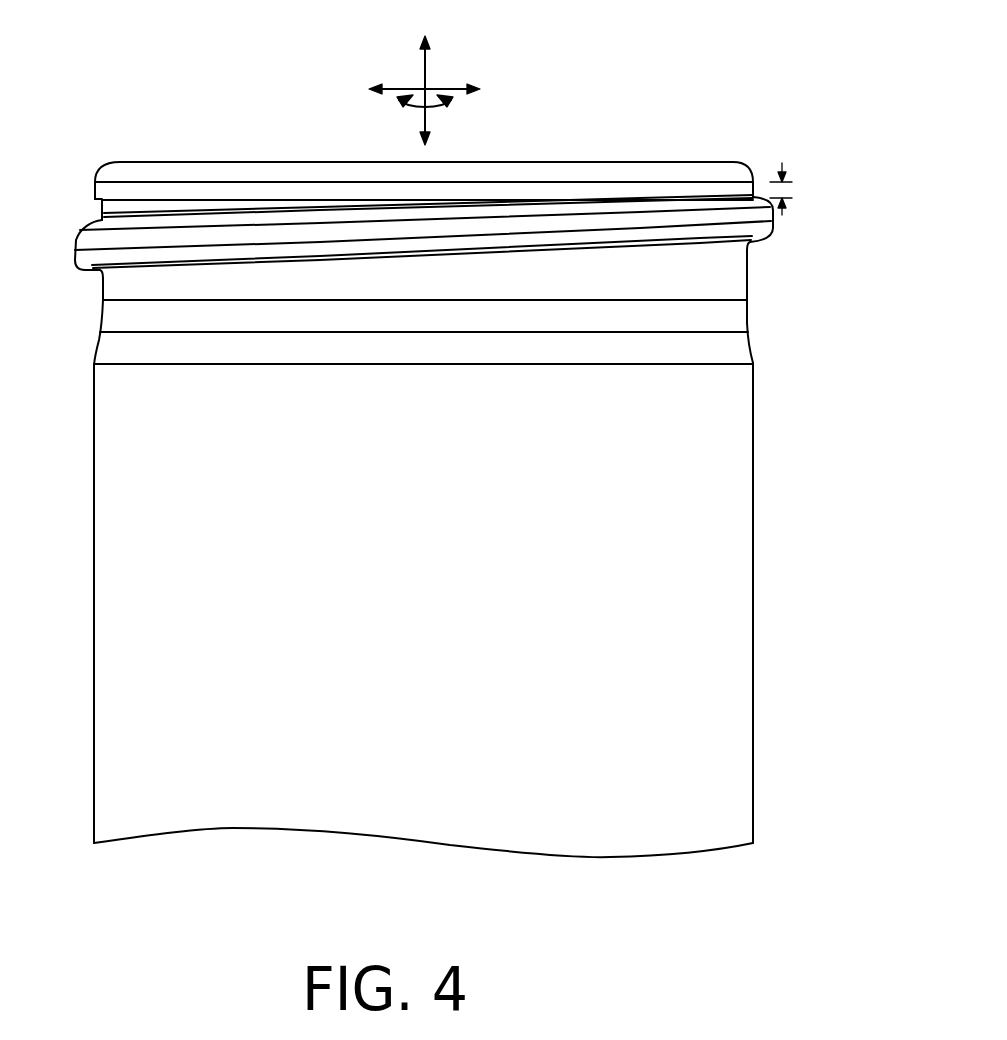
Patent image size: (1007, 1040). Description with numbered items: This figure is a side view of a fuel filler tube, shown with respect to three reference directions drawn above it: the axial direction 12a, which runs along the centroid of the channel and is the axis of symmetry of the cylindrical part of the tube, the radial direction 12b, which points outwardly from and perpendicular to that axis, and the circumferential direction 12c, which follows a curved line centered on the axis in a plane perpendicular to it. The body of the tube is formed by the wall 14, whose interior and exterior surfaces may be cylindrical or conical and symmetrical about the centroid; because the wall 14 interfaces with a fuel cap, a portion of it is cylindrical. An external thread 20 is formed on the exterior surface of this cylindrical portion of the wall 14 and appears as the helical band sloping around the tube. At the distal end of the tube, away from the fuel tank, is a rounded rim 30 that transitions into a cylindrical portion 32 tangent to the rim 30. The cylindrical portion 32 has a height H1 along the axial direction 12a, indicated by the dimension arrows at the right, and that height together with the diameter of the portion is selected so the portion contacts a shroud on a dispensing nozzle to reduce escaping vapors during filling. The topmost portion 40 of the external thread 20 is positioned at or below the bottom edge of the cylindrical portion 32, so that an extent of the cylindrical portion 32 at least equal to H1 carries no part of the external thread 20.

The axial direction 12a is at (426, 53).
The radial direction 12b is at (403, 89).
The circumferential direction 12c is at (448, 105).
The wall 14 is at (739, 455).
The external thread 20 is at (772, 216).
The rounded rim 30 is at (731, 167).
The cylindrical portion 32 is at (106, 193).
The topmost portion of the external thread 40 is at (757, 197).
The height of the cylindrical portion H1 is at (786, 213).